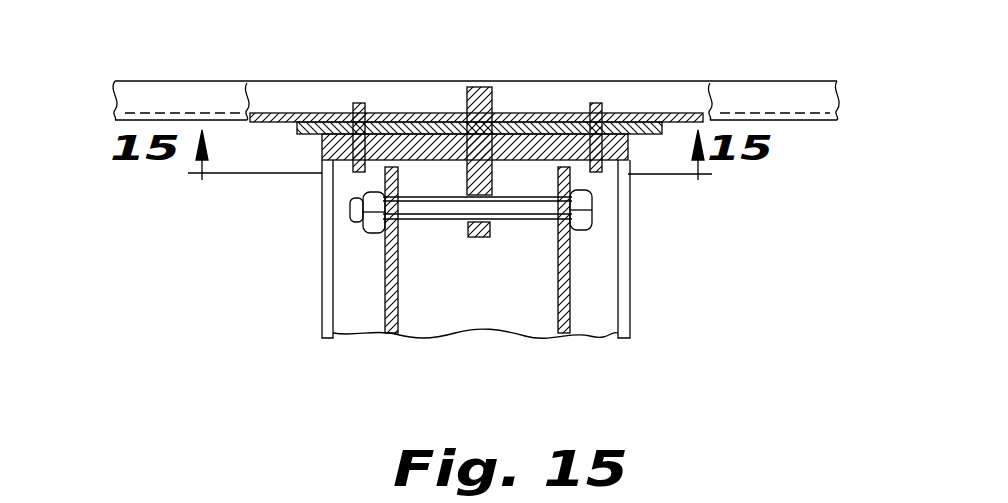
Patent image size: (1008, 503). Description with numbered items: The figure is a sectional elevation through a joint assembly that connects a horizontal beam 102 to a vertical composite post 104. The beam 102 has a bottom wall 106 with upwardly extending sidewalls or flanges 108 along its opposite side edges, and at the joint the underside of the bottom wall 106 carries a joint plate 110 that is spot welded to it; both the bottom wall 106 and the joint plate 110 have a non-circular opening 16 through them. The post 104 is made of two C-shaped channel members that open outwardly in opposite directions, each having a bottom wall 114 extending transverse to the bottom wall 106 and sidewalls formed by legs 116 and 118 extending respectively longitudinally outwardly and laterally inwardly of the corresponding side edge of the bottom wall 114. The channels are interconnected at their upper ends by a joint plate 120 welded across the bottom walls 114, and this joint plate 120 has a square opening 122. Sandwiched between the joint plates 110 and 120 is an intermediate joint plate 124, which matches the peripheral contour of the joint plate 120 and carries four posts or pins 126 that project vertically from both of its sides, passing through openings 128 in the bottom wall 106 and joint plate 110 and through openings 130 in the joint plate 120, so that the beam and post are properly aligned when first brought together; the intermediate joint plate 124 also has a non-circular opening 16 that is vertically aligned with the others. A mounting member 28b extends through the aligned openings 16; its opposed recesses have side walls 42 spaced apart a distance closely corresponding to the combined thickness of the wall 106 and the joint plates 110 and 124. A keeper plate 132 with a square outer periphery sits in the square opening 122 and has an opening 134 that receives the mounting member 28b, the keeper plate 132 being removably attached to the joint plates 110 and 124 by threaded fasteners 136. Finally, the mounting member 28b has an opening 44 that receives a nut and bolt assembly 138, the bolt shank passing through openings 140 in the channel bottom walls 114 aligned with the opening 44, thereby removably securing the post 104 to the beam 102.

The non-circular opening 16 is at (537, 132).
The mounting member 28b is at (482, 96).
The side walls 42 is at (476, 86).
The opening 44 is at (491, 218).
The horizontal beam 102 is at (782, 67).
The vertical composite post 104 is at (295, 246).
The bottom wall 106 is at (700, 112).
The sidewalls or flanges 108 is at (805, 85).
The joint plate 110 is at (296, 127).
The bottom walls 114 is at (400, 320).
The legs 116 is at (367, 320).
The legs 118 is at (335, 332).
The joint plate 120 is at (333, 150).
The square opening 122 is at (522, 223).
The intermediate joint plate 124 is at (305, 110).
The posts or pins 126 is at (360, 103).
The openings 128 is at (353, 103).
The openings 130 is at (603, 170).
The keeper plate 132 is at (497, 216).
The opening 134 is at (470, 172).
The threaded fasteners 136 is at (433, 145).
The nut and bolt assembly 138 is at (441, 245).
The openings 140 is at (378, 233).